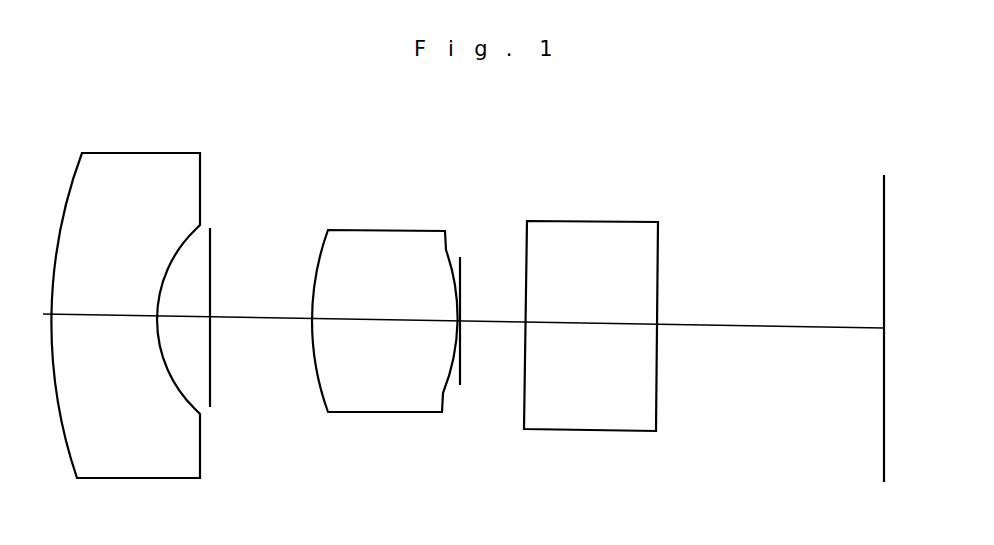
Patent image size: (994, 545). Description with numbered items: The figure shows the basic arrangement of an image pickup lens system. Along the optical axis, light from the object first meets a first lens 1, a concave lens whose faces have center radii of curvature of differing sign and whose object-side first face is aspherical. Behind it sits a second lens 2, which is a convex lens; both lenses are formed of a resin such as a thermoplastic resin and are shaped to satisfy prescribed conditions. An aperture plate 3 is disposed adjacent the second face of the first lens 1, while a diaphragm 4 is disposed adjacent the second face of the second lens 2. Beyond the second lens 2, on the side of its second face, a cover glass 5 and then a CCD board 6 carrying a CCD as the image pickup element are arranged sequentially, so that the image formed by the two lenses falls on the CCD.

The first lens 1 is at (137, 153).
The second lens 2 is at (387, 230).
The aperture plate 3 is at (212, 243).
The diaphragm 4 is at (462, 268).
The cover glass 5 is at (598, 221).
The CCD board 6 is at (883, 262).